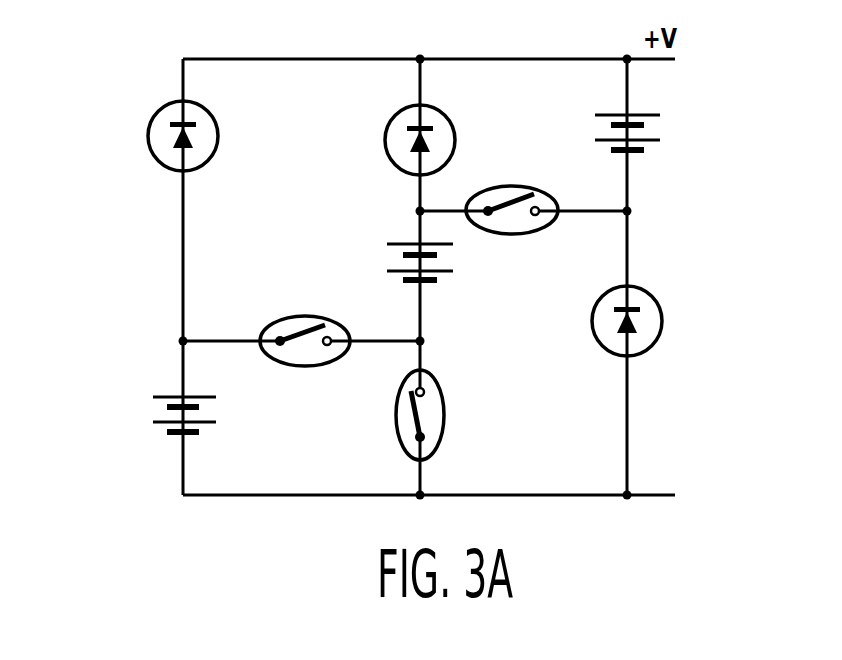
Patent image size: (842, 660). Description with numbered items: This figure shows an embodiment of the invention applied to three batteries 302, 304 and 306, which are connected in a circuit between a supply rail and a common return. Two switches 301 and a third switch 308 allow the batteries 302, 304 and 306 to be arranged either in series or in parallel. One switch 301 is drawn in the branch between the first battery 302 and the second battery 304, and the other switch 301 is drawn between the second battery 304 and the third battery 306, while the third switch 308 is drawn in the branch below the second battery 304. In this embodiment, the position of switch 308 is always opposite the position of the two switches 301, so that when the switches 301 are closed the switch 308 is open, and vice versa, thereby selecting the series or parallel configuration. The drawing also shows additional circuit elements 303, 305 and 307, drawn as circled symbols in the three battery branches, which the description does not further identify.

The switch 301 is at (508, 185).
The battery 302 is at (150, 410).
The light emitting diode 303 is at (148, 124).
The battery 304 is at (445, 258).
The light emitting diode 305 is at (384, 127).
The battery 306 is at (652, 128).
The light emitting diode 307 is at (665, 319).
The third switch 308 is at (447, 416).